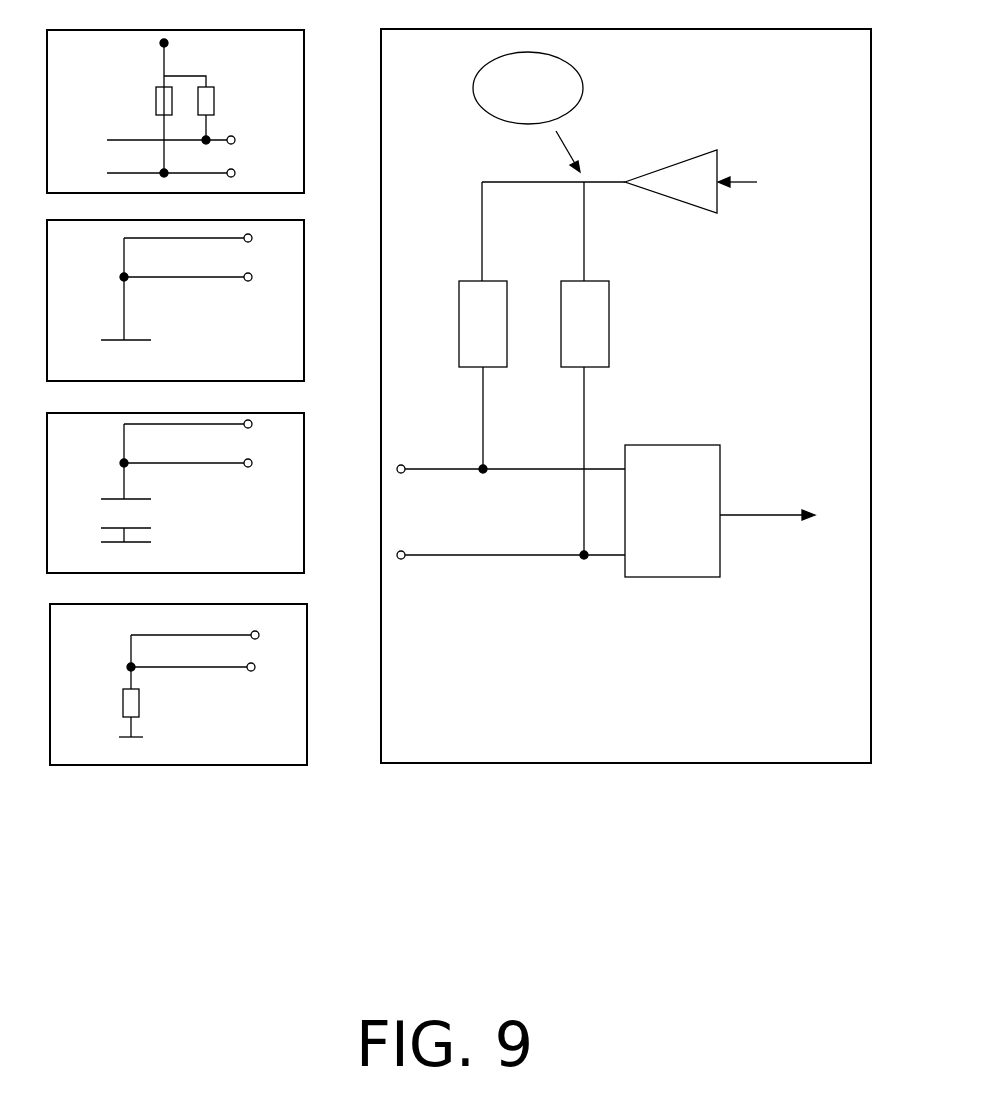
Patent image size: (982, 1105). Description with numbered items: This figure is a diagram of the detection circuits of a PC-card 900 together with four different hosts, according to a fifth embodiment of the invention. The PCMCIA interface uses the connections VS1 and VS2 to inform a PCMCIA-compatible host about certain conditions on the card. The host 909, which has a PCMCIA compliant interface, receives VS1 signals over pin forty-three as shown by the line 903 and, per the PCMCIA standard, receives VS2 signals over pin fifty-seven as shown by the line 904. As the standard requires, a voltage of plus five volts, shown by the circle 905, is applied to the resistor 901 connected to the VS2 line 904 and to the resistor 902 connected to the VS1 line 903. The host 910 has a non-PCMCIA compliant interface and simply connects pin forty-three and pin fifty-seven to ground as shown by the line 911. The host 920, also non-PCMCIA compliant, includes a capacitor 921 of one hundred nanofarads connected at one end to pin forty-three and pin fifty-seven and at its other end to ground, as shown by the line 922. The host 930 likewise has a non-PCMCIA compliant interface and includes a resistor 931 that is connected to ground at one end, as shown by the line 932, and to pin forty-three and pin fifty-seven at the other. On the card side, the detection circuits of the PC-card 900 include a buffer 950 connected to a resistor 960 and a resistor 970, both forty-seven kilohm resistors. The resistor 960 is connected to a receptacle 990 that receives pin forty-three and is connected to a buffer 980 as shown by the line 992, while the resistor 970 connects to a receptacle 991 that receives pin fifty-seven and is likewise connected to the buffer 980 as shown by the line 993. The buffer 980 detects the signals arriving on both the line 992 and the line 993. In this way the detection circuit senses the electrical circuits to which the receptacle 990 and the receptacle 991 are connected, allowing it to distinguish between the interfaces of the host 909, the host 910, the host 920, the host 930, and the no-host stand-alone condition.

The PC-card 900 is at (626, 396).
The resistor 901 is at (138, 101).
The resistor 902 is at (230, 113).
The line 903 is at (145, 136).
The line 904 is at (145, 169).
The circle 905 is at (139, 103).
The host 909 is at (202, 111).
The host 910 is at (202, 300).
The line 911 is at (135, 342).
The host 920 is at (202, 493).
The capacitor 921 is at (147, 516).
The line 922 is at (130, 544).
The host 930 is at (204, 684).
The resistor 931 is at (106, 703).
The line 932 is at (159, 731).
The buffer 950 is at (664, 166).
The resistor 960 is at (483, 324).
The resistor 970 is at (585, 324).
The buffer 980 is at (672, 511).
The receptacle 990 is at (401, 488).
The receptacle 991 is at (401, 574).
The line 992 is at (515, 486).
The line 993 is at (515, 572).